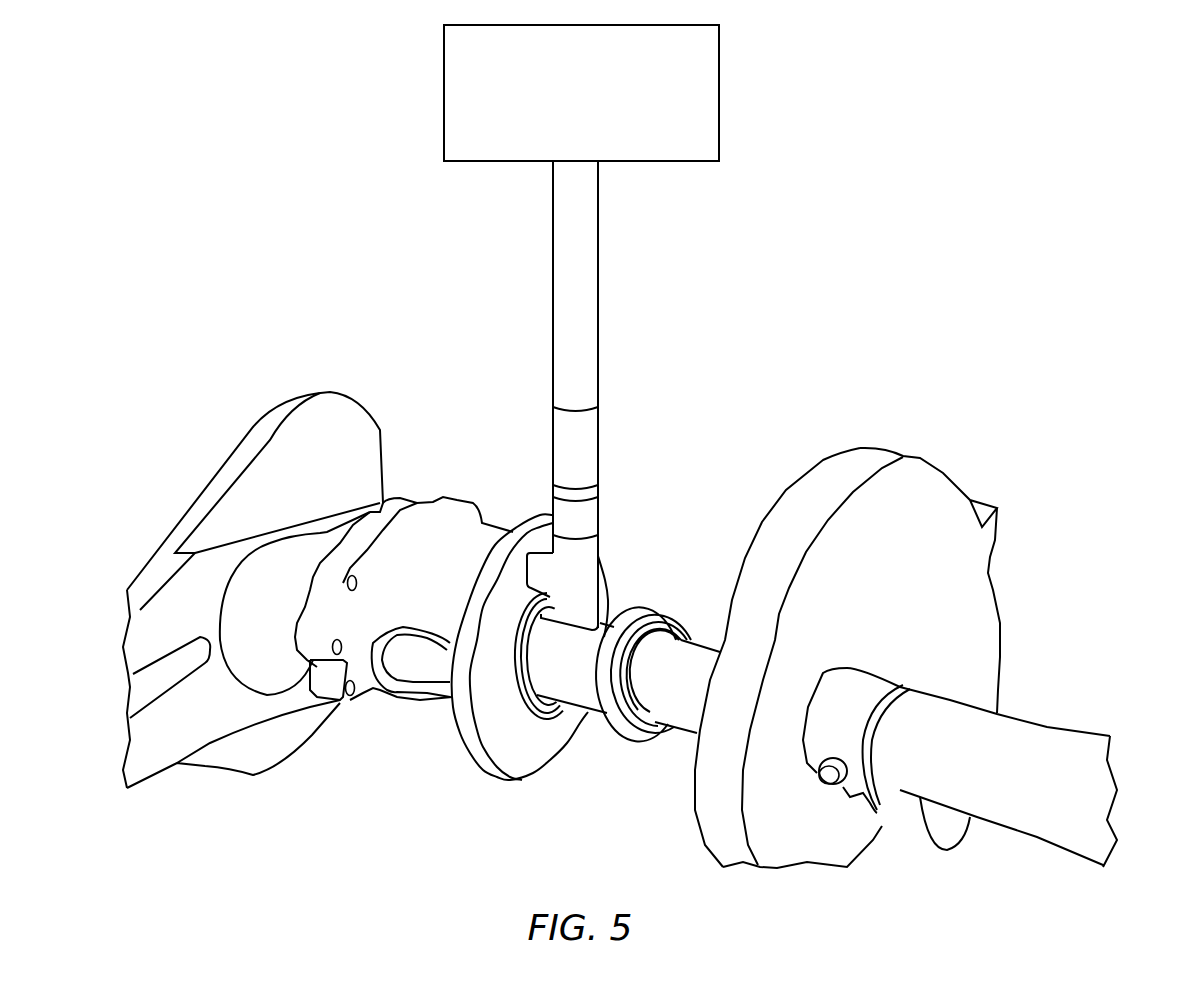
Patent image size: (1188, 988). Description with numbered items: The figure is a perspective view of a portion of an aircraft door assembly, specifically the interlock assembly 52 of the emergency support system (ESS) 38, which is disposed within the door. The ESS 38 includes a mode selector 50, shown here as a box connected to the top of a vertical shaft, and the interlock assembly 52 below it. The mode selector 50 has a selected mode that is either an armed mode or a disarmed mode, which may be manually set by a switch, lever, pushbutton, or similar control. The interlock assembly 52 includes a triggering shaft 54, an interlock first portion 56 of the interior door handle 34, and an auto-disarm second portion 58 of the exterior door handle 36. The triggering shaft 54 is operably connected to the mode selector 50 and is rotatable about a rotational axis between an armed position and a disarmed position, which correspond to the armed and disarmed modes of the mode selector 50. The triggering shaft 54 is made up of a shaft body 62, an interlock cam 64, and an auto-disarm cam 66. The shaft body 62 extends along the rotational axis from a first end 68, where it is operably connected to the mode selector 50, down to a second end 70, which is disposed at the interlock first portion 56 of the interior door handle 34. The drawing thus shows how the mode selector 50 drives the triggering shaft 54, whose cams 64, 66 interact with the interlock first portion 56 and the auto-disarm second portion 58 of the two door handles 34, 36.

The interior door handle 34 is at (963, 623).
The exterior door handle 36 is at (240, 420).
The emergency support system (ESS) 38 is at (773, 72).
The mode selector 50 is at (567, 136).
The interlock assembly 52 is at (625, 553).
The triggering shaft 54 is at (580, 372).
The interlock first portion 56 is at (670, 590).
The auto-disarm second portion 58 is at (471, 483).
The shaft body 62 is at (577, 327).
The interlock cam 64 is at (577, 613).
The auto-disarm cam 66 is at (557, 578).
The first end 68 is at (573, 173).
The second end 70 is at (582, 648).